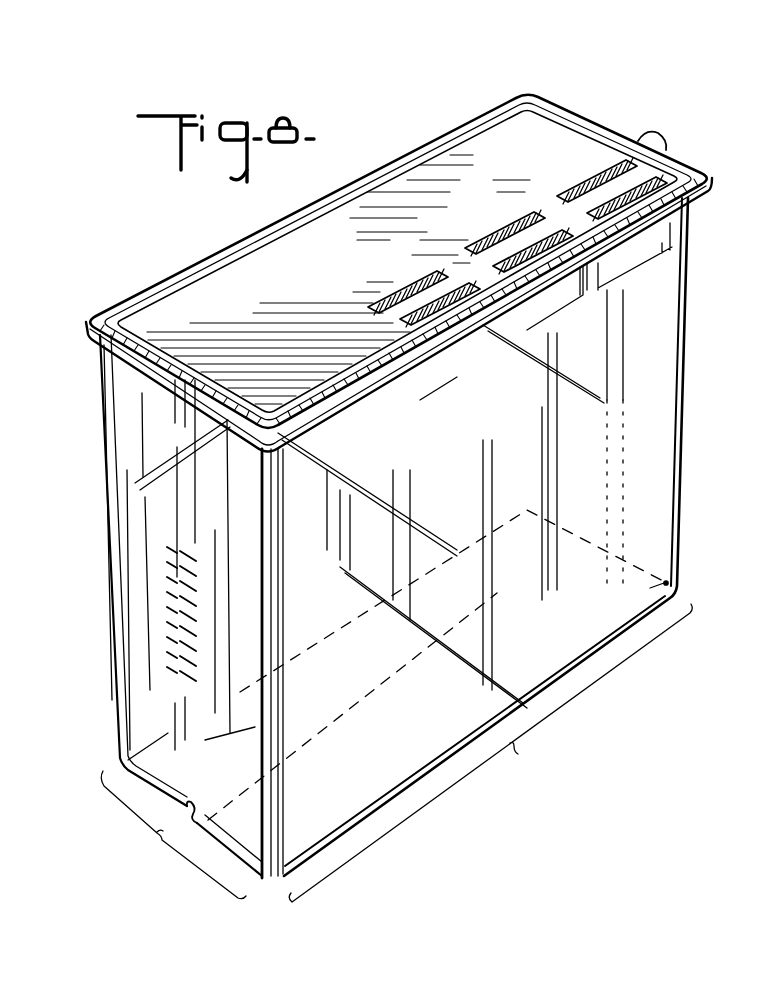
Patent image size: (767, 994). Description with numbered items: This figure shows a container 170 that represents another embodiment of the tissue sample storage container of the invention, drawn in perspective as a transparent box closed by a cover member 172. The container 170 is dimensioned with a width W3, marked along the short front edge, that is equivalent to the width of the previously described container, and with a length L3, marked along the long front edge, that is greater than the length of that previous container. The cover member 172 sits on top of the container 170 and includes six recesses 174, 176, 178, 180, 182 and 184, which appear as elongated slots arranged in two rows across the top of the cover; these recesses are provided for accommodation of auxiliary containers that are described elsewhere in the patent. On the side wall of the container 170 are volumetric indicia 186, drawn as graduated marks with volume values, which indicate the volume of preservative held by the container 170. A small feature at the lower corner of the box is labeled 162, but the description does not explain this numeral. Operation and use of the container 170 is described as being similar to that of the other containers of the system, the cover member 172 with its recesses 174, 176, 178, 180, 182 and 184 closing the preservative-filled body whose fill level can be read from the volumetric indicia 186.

The container 170 is at (702, 318).
The cover member 172 is at (248, 255).
The recess 174 is at (605, 170).
The recess 176 is at (640, 208).
The recess 178 is at (503, 222).
The recess 180 is at (548, 253).
The recess 182 is at (413, 281).
The recess 184 is at (447, 308).
The volumetric indicia 186 is at (125, 636).
The drain opening 162 is at (176, 813).
The width W3 is at (173, 835).
The length L3 is at (490, 753).